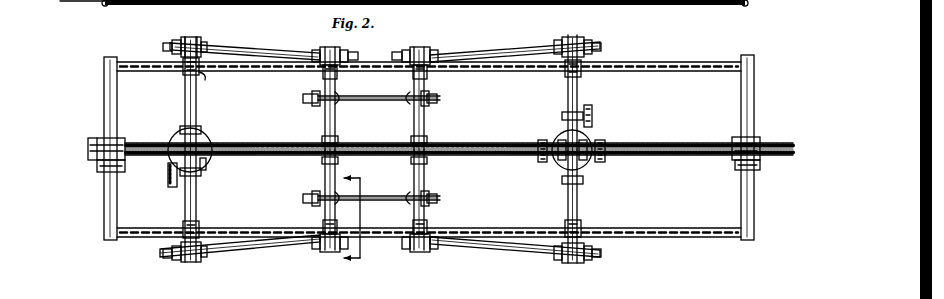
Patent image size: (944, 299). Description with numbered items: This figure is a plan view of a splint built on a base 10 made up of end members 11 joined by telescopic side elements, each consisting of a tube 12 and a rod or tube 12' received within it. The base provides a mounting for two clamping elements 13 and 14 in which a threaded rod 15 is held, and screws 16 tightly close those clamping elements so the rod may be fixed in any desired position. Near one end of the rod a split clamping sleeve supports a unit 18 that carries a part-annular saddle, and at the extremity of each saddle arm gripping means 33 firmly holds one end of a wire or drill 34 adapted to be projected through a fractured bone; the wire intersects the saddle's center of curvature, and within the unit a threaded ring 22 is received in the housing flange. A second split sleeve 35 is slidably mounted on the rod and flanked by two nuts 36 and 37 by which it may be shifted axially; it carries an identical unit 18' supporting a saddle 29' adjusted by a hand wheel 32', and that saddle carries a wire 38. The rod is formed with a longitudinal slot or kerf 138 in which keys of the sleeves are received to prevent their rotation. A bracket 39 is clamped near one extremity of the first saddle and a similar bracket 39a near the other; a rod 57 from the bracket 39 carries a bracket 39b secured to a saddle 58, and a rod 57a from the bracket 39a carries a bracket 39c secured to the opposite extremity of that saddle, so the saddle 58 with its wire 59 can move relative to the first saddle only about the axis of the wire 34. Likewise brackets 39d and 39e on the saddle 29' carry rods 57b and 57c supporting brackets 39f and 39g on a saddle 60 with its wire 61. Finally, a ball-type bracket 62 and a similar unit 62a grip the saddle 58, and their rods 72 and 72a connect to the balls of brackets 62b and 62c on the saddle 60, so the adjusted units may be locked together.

The base 10 is at (692, 55).
The end members 11 is at (102, 4).
The tubes 12 is at (429, 47).
The rods or tubes 12' is at (429, 132).
The clamping element 13 is at (100, 156).
The clamping element 14 is at (756, 140).
The threaded rod 15 is at (272, 158).
The screws 16 is at (102, 172).
The support 18 is at (210, 152).
The unit 18' is at (594, 148).
The third ring 22 is at (352, 220).
The saddle 29' is at (590, 206).
The hand wheel 32' is at (610, 114).
The gripping means 33 is at (185, 78).
The wire or drill 34 is at (197, 96).
The split sleeve clamping means 35 is at (612, 2).
The nut 36 is at (538, 26).
The nut 37 is at (628, 1).
The wire 38 is at (578, 93).
The bracket 39 is at (180, 222).
The bracket 39a is at (206, 37).
The bracket 39b is at (322, 250).
The bracket 39c is at (318, 44).
The bracket 39d is at (586, 262).
The bracket 39e is at (560, 36).
The bracket 39f is at (416, 250).
The bracket 39g is at (436, 44).
The rod 57 is at (257, 252).
The rod 57a is at (258, 38).
The rod 57b is at (492, 250).
The rod 57c is at (502, 56).
The saddle 58 is at (325, 125).
The wire 59 is at (325, 172).
The saddle 60 is at (425, 131).
The wire 61 is at (425, 173).
The bracket 62 is at (313, 205).
The unit 62a is at (313, 94).
The bracket 62b is at (437, 210).
The bracket 62c is at (436, 105).
The rod 72 is at (361, 208).
The rod 72a is at (372, 96).
The slot or kerf 138 is at (690, 143).